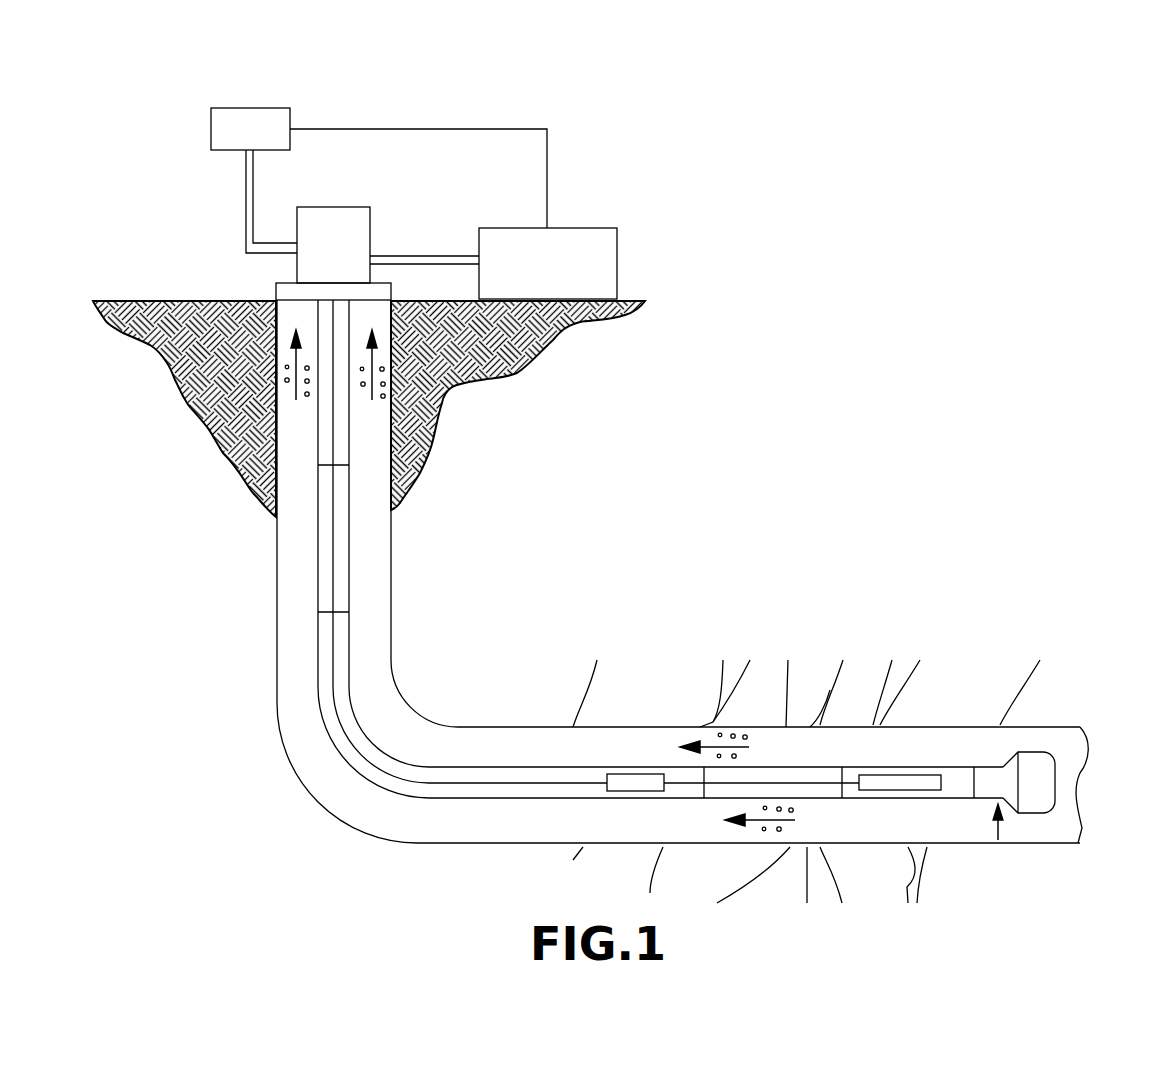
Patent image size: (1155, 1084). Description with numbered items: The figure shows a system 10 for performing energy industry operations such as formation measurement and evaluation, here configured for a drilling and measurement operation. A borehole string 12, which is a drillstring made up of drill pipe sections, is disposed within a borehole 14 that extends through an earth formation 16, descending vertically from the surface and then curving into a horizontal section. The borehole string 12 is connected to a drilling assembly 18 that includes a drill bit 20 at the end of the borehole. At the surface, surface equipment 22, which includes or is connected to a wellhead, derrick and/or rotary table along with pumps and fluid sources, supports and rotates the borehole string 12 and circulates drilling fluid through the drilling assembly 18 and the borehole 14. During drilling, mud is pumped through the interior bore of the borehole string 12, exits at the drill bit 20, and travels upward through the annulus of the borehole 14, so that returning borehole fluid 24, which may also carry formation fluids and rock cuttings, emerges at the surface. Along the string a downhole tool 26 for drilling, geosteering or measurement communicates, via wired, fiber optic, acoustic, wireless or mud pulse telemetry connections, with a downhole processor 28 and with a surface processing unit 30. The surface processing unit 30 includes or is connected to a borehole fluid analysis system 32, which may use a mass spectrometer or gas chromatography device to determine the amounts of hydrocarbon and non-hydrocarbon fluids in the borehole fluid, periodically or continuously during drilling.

The system 10 is at (167, 213).
The borehole string 12 is at (352, 558).
The borehole 14 is at (277, 617).
The earth formation 16 is at (187, 364).
The drilling assembly 18 is at (998, 836).
The drill bit 20 is at (1040, 793).
The surface equipment 22 is at (348, 230).
The returning borehole fluid 24 is at (294, 394).
The downhole tool 26 is at (925, 767).
The downhole processor 28 is at (635, 773).
The surface processing unit 30 is at (584, 233).
The borehole fluid analysis system 32 is at (251, 118).